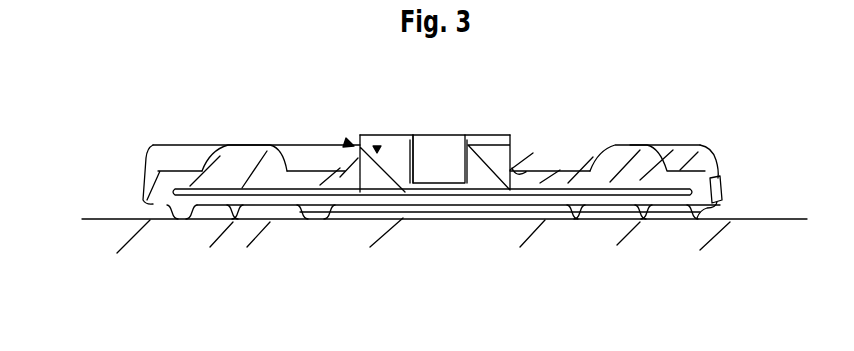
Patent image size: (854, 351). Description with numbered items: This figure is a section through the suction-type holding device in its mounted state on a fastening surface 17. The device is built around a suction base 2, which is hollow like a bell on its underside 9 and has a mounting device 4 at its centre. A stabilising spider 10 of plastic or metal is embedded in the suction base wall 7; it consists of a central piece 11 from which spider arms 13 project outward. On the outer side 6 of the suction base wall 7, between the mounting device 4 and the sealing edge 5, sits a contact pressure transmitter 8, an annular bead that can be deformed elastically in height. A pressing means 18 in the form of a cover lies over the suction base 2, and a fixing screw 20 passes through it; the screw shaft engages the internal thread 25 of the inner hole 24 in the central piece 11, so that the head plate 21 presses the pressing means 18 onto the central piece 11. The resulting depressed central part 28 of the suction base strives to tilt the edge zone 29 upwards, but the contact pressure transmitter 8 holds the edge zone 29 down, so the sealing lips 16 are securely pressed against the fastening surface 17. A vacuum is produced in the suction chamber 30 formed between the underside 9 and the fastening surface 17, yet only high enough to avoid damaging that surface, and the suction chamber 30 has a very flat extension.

The pressing means 18 is at (156, 143).
The outer side 6 is at (190, 165).
The contact pressure transmitter 8 is at (245, 162).
The spider arms 13 is at (300, 190).
The suction base 2 is at (350, 143).
The central piece 11 is at (377, 150).
The inner hole 24 is at (423, 138).
The mounting device 4 is at (458, 138).
The fixing screw 20 is at (467, 135).
The head plate 21 is at (502, 135).
The depressed central part 28 is at (548, 178).
The edge zone 29 is at (668, 180).
The suction base wall 7 is at (716, 180).
The sealing edge 5 is at (718, 186).
The fastening surface 17 is at (115, 215).
The sealing lips 16 is at (190, 222).
The underside 9 is at (355, 200).
The internal thread 25 is at (436, 185).
The suction chamber 30 is at (500, 210).
The stabilising spider 10 is at (522, 205).